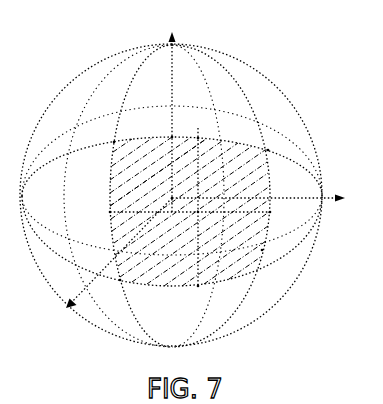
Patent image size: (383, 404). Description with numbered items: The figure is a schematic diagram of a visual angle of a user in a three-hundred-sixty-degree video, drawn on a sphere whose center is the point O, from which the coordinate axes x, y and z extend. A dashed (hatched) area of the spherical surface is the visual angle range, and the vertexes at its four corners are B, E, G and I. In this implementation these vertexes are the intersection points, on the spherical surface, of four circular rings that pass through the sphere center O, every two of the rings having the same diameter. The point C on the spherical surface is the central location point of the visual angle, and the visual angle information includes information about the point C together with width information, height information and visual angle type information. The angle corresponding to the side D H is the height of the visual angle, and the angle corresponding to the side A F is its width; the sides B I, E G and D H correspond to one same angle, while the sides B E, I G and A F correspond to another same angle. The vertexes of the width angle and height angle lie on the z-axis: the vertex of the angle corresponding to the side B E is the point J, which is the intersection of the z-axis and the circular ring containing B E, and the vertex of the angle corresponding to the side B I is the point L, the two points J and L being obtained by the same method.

The point A is at (101, 216).
The vertex B is at (104, 132).
The point C is at (209, 224).
The point D is at (205, 129).
The vertex E is at (277, 140).
The point F is at (278, 214).
The vertex G is at (268, 273).
The point H is at (197, 299).
The vertex I is at (116, 296).
The point J is at (180, 126).
The point L is at (142, 202).
The sphere center O is at (184, 185).
The x-axis x is at (111, 268).
The y-axis y is at (269, 208).
The z-axis z is at (178, 110).